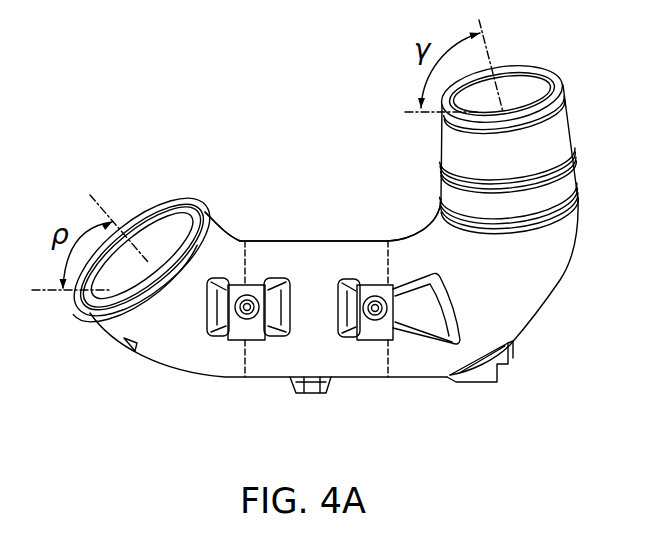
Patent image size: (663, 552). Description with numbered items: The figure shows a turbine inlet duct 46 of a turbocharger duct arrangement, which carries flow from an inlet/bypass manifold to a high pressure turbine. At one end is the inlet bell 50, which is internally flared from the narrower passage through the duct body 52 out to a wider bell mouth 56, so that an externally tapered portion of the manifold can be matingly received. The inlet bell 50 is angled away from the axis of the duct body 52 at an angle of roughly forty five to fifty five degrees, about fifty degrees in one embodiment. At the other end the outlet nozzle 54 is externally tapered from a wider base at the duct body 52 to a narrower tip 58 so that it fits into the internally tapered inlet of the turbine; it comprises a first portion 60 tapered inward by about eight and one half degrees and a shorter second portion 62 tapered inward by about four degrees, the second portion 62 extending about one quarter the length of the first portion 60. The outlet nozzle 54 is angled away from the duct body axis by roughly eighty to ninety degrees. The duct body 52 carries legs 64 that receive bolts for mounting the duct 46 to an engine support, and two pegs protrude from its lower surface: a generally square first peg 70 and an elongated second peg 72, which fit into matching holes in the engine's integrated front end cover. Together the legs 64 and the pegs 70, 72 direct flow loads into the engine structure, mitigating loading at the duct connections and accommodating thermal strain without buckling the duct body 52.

The turbine inlet duct 46 is at (257, 112).
The inlet bell 50 is at (223, 237).
The duct body 52 is at (300, 240).
The outlet nozzle 54 is at (421, 224).
The bell mouth 56 is at (150, 246).
The tip 58 is at (540, 70).
The first portion 60 is at (567, 118).
The second portion 62 is at (563, 92).
The legs 64 is at (240, 340).
The first peg 70 is at (310, 395).
The second peg 72 is at (510, 373).